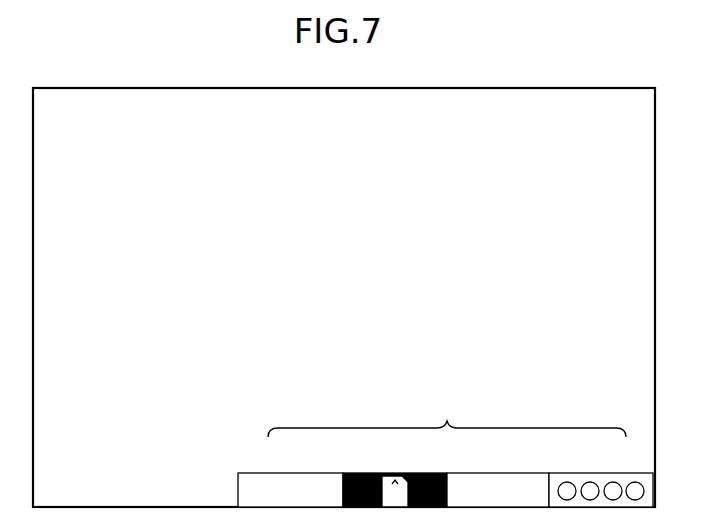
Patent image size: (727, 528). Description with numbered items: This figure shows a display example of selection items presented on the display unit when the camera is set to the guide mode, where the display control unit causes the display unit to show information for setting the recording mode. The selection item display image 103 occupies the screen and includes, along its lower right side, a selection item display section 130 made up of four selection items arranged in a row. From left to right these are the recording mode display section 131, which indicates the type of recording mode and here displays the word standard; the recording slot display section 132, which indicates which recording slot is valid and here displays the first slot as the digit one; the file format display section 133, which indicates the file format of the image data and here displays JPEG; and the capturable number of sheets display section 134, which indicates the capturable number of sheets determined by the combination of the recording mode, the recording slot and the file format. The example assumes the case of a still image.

The selection item display image 103 is at (601, 88).
The selection item display section 130 is at (447, 417).
The recording mode display section 131 is at (290, 472).
The recording slot display section 132 is at (393, 472).
The file format display section 133 is at (497, 472).
The capturable number of sheets display section 134 is at (600, 472).